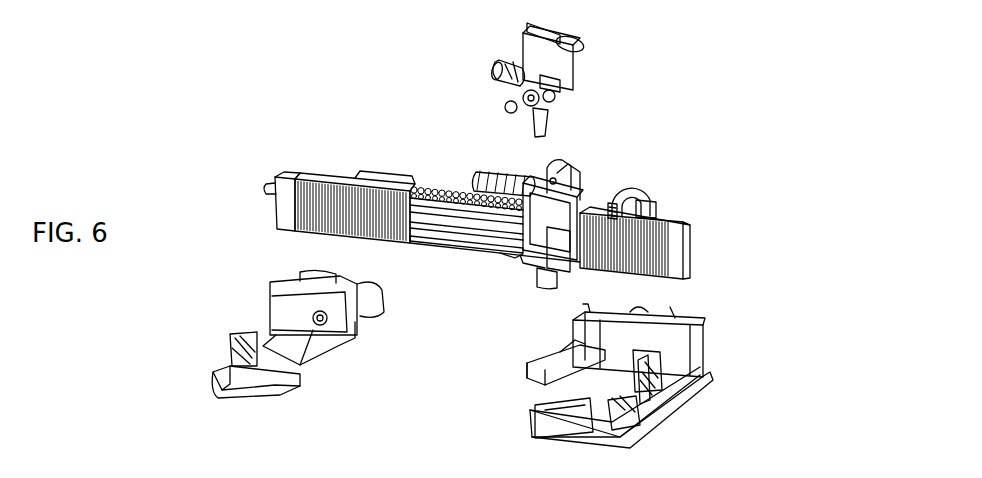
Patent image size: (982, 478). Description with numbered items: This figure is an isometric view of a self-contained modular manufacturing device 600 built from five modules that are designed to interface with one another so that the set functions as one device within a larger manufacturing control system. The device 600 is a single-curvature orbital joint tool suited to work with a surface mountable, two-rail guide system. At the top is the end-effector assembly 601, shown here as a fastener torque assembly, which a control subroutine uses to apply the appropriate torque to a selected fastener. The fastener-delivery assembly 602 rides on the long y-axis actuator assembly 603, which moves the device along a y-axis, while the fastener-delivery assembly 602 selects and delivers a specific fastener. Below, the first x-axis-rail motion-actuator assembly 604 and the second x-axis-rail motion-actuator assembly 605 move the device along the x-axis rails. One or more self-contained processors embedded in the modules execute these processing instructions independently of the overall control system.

The modular device 600 is at (224, 112).
The end-effector assembly 601 is at (595, 40).
The fastener-delivery assembly 602 is at (540, 172).
The y-axis actuator assembly 603 is at (327, 170).
The first x-axis-rail motion-actuator assembly 604 is at (718, 348).
The x-axis-rail motion-actuator assembly 605 is at (252, 309).